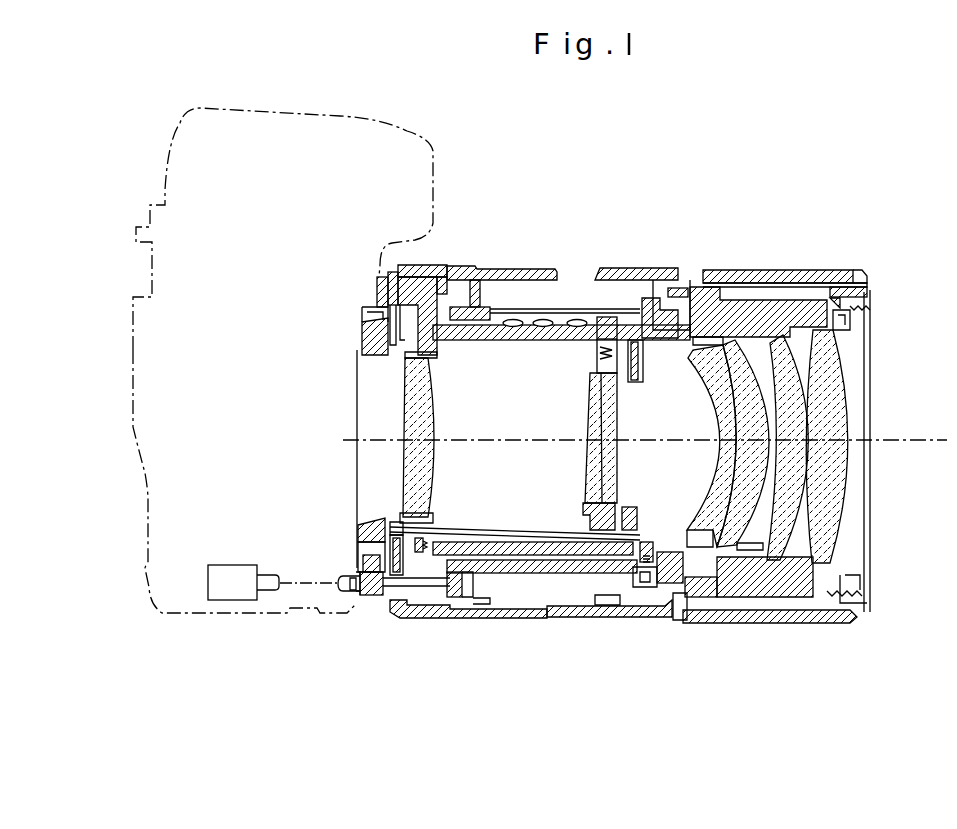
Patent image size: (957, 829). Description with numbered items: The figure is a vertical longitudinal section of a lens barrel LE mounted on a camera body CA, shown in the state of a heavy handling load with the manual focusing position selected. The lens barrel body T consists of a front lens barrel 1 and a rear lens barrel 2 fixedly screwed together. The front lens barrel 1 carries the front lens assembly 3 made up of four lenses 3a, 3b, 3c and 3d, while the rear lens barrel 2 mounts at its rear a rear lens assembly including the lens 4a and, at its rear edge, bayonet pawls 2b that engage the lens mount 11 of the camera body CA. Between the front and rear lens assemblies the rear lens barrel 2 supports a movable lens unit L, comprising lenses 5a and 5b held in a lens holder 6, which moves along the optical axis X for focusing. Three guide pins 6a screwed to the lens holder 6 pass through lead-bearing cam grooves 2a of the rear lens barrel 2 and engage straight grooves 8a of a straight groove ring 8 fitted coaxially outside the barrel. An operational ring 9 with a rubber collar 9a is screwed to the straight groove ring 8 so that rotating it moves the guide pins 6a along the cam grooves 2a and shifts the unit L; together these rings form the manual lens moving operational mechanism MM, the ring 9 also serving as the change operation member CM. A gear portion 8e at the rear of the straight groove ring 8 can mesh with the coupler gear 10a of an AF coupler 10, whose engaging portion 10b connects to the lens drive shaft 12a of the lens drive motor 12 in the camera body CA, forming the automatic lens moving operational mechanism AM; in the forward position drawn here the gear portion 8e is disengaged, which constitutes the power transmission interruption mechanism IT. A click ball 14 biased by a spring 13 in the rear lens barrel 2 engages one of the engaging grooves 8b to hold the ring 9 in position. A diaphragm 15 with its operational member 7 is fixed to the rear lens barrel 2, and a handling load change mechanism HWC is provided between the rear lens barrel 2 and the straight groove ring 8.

The front lens barrel 1 is at (752, 285).
The rear lens barrel 2 is at (690, 285).
The cam grooves 2a is at (597, 340).
The bayonet pawls 2b is at (375, 305).
The front lens assembly 3 is at (885, 700).
The lens 3a is at (830, 565).
The lens 3b is at (760, 557).
The lens 3c is at (725, 555).
The lens 3d is at (700, 547).
The lens 4a is at (405, 380).
The lens 5a is at (590, 490).
The lens 5b is at (590, 462).
The lens holder 6 is at (595, 518).
The guide pins 6a is at (600, 278).
The operational member 7 is at (458, 540).
The straight groove ring 8 is at (522, 575).
The straight grooves 8a is at (497, 290).
The engaging grooves 8b is at (668, 592).
The gear portion 8e is at (477, 597).
The operational ring 9 is at (560, 590).
The rubber collar 9a is at (636, 612).
The AF coupler 10 is at (372, 598).
The coupler gear 10a is at (440, 600).
The engaging portion 10b is at (360, 596).
The lens mount 11 is at (376, 277).
The lens drive motor 12 is at (230, 575).
The lens drive shaft 12a is at (350, 592).
The spring 13 is at (650, 542).
The click ball 14 is at (605, 597).
The diaphragm 15 is at (647, 374).
The camera body CA is at (372, 130).
The lens barrel LE is at (805, 212).
The handling load change mechanism HWC is at (586, 308).
The lens barrel body T is at (748, 200).
The movable lens unit L is at (520, 452).
The optical axis X is at (633, 439).
The automatic lens moving operational mechanism AM is at (476, 616).
The manual lens moving operational mechanism MM is at (575, 706).
The change operation member CM is at (543, 744).
The power transmission interruption mechanism IT is at (655, 645).